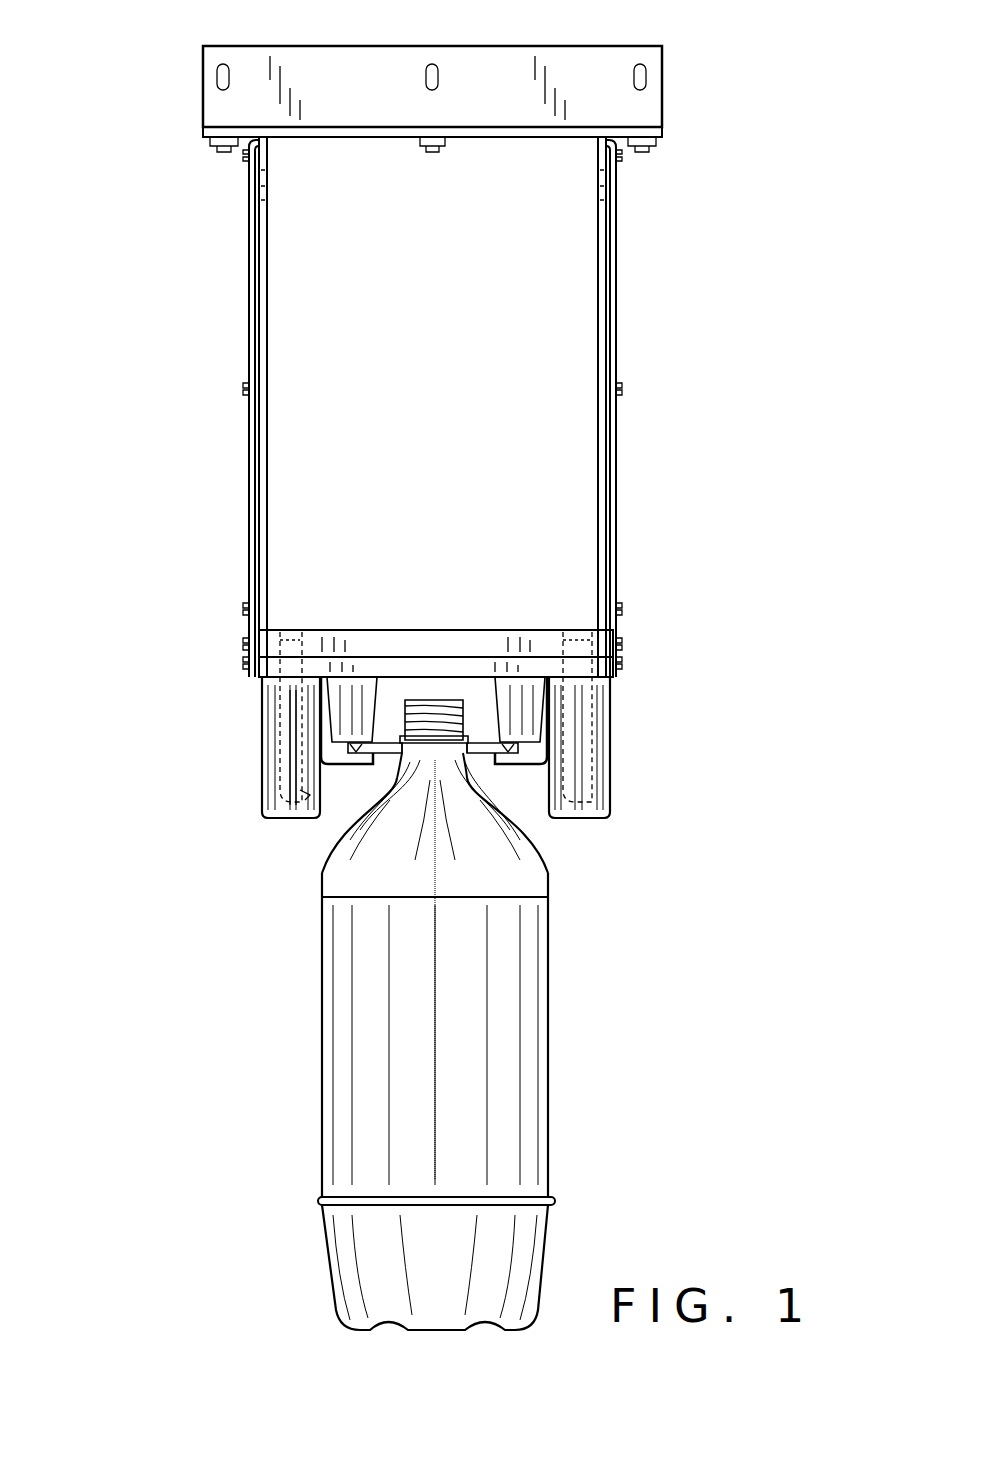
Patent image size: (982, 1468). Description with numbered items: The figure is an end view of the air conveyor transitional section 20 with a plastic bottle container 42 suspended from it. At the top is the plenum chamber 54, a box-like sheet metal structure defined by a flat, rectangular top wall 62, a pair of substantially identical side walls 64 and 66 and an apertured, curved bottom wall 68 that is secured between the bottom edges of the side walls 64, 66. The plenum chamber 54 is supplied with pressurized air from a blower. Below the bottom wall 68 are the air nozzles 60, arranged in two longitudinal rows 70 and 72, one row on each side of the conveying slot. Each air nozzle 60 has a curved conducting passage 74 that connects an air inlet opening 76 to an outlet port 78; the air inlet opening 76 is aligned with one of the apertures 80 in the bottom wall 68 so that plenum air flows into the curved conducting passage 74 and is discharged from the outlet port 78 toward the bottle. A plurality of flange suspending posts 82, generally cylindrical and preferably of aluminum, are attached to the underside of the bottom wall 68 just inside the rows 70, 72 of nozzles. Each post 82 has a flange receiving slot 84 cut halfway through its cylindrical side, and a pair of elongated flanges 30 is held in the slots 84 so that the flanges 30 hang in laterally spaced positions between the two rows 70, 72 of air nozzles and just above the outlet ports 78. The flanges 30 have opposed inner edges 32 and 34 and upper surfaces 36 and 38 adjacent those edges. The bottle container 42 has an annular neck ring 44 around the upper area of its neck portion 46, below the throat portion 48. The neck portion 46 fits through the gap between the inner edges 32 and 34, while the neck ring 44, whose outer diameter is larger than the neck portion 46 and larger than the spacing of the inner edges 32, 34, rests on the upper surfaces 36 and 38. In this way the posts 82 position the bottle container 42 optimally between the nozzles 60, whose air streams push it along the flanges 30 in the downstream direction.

The air conveyor transitional section 20 is at (178, 497).
The elongated flanges 30 is at (325, 748).
The inner edge 32 is at (427, 753).
The inner edge 34 is at (505, 885).
The upper surface 36 is at (392, 750).
The upper surface 38 is at (474, 745).
The plastic bottle container 42 is at (446, 1040).
The annular neck ring 44 is at (437, 750).
The neck portion 46 is at (500, 778).
The throat portion 48 is at (433, 700).
The plenum chamber 54 is at (597, 283).
The air nozzles 60 is at (262, 780).
The top wall 62 is at (493, 127).
The side wall 64 is at (250, 312).
The side wall 66 is at (615, 350).
The bottom wall 68 is at (507, 655).
The longitudinal row of air nozzles 70 is at (614, 808).
The longitudinal row of air nozzles 72 is at (260, 807).
The curved conducting passage 74 is at (305, 727).
The air inlet opening 76 is at (293, 673).
The outlet port 78 is at (312, 796).
The apertures 80 is at (307, 643).
The flange suspending posts 82 is at (340, 708).
The flange receiving slot 84 is at (354, 742).